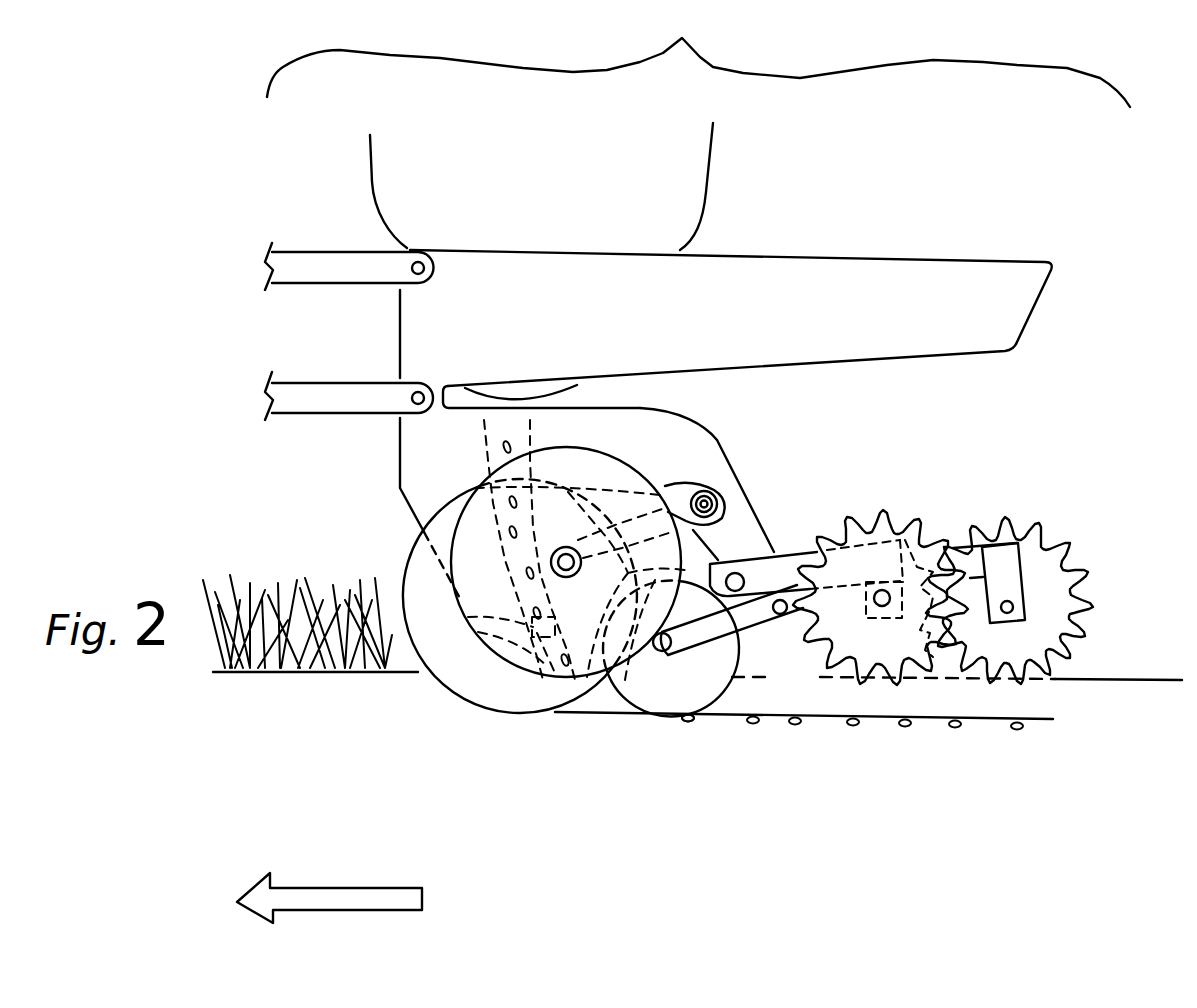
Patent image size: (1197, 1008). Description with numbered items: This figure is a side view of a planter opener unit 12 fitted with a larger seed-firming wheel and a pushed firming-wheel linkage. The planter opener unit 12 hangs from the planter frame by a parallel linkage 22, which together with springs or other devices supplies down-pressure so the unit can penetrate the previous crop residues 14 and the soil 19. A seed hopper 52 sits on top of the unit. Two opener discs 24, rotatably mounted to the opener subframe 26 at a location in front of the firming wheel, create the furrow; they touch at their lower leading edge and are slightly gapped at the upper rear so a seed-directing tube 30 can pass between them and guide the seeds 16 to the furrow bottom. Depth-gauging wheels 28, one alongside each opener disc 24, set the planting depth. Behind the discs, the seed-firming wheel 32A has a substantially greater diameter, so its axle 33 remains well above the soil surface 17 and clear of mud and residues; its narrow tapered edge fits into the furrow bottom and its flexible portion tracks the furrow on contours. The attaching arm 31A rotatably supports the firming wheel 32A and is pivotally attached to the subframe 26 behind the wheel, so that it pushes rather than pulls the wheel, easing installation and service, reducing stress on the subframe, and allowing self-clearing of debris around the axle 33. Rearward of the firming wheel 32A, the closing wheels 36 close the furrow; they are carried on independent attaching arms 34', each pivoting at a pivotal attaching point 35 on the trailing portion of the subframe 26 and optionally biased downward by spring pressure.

The planter opener unit 12 is at (698, 56).
The seed hopper 52 is at (366, 177).
The parallel linkage 22 is at (296, 290).
The seed-directing tube 30 is at (494, 434).
The crop residues 14 is at (265, 569).
The soil 19 is at (273, 692).
The opener discs 24 is at (435, 690).
The depth-gauging wheels 28 is at (494, 659).
The seeds 16 is at (596, 698).
The axle 33 is at (667, 657).
The seed-firming wheel 32A is at (720, 699).
The attaching arm 31A is at (754, 637).
The opener subframe 26 is at (736, 449).
The pivotal attaching point 35 is at (733, 565).
The independent attaching arms 34' is at (905, 515).
The closing wheels 36 is at (980, 658).
The soil surface 17 is at (1127, 681).